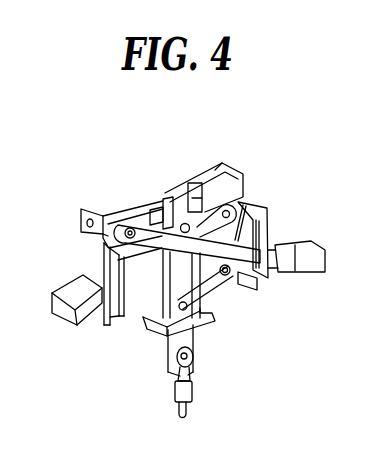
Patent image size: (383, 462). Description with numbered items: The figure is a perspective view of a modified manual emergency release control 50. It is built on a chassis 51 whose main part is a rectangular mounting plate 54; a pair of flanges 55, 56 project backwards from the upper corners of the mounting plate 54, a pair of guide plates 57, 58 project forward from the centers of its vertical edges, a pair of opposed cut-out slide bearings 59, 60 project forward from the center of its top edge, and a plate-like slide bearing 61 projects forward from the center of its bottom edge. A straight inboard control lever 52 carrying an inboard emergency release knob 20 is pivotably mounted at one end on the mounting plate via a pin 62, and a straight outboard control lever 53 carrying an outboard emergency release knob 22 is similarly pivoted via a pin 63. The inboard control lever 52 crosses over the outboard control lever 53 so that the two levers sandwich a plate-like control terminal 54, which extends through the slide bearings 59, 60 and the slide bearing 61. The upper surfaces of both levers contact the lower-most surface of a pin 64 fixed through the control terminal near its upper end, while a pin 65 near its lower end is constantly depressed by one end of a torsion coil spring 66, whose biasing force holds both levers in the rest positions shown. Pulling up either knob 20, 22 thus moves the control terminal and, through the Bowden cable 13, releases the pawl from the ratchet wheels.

The manual emergency release control 50 is at (214, 161).
The flange 55 is at (230, 165).
The pin 64 is at (185, 223).
The cut-out slide bearing 59 is at (195, 207).
The pin 63 is at (238, 200).
The inboard control lever 52 is at (260, 220).
The guide plate 57 is at (270, 227).
The inboard emergency release knob 20 is at (302, 249).
The pin 62 is at (128, 226).
The cut-out slide bearing 60 is at (162, 212).
The flange 56 is at (82, 212).
The mounting plate / control terminal 54 is at (113, 218).
The guide plate 58 is at (103, 246).
The outboard emergency release knob 22 is at (66, 296).
The outboard control lever 53 is at (140, 300).
The pin 65 is at (167, 334).
The torsion coil spring 66 is at (218, 287).
The slide bearing 61 is at (211, 308).
The chassis 51 is at (245, 290).
The Bowden cable 13 is at (190, 412).